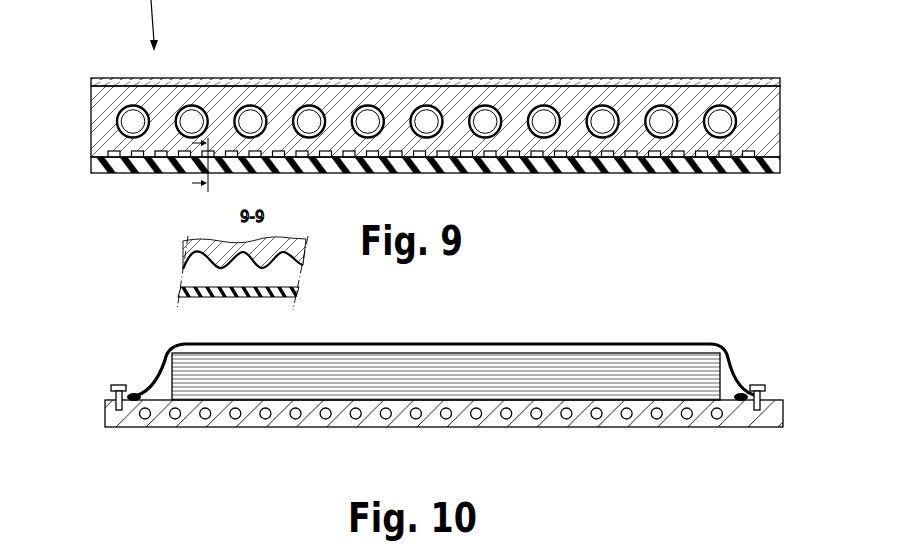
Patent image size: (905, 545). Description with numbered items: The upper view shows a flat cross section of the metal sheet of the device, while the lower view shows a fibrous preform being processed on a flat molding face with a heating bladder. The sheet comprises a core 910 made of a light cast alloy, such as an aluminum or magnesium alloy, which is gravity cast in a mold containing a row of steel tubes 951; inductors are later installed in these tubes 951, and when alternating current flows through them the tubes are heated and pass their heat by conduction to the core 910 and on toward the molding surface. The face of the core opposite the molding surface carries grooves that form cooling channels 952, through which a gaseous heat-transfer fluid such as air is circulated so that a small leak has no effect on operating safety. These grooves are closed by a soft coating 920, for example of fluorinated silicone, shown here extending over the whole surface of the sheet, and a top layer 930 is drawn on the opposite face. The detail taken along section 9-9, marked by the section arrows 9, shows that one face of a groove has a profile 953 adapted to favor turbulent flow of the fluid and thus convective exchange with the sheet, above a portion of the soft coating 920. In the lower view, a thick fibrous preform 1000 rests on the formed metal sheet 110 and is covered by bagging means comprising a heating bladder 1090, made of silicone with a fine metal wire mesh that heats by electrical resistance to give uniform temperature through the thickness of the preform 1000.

In FIG. 9, the core 910 is at (100, 109).
In FIG. 9, the soft coating 920 is at (125, 163).
In FIG. 9, the top plate 930 is at (385, 78).
In FIG. 9, the steel tubes 951 is at (613, 108).
In FIG. 9, the cooling channels 952 is at (750, 145).
In FIG. 9, the profile 953 is at (277, 265).
In FIG. 9, the section 9- 9 is at (191, 163).
In FIG. 10, the formed metal sheet 110 is at (128, 427).
In FIG. 10, the fibrous preform 1000 is at (205, 372).
In FIG. 10, the heating bladder 1090 is at (390, 335).